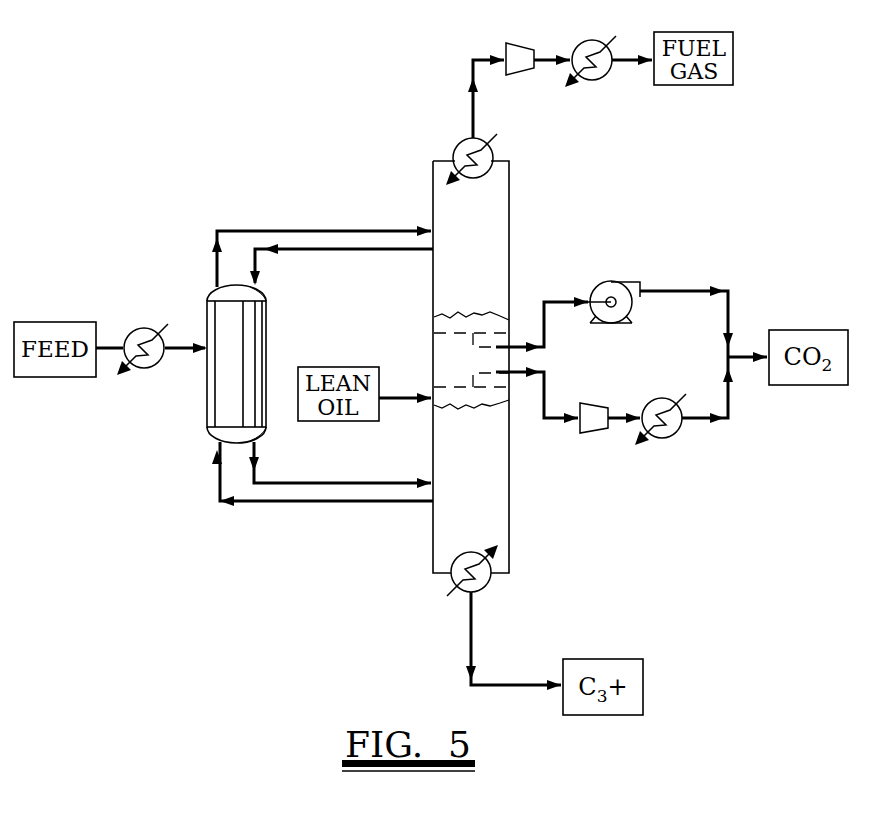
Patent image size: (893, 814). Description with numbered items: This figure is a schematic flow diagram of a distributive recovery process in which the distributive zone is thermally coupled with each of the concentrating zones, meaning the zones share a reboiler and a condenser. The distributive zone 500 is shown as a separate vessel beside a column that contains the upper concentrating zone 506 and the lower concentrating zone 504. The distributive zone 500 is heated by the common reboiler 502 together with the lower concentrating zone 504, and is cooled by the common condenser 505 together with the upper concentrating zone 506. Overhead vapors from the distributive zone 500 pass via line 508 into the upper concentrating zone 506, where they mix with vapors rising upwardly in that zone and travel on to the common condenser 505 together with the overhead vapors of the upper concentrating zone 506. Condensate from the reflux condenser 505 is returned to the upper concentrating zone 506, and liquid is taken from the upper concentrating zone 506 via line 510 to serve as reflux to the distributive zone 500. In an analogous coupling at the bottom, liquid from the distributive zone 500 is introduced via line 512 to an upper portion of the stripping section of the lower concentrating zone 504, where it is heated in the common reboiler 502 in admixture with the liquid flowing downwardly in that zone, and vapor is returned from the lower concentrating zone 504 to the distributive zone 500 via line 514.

The distributive zone 500 is at (230, 317).
The common reboiler 502 is at (491, 582).
The lower concentrating zone 504 is at (488, 437).
The upper concentrating zone 506 is at (490, 273).
The common condenser 505 is at (455, 143).
The line 508 is at (257, 228).
The line 510 is at (318, 252).
The line 512 is at (322, 483).
The line 514 is at (262, 505).